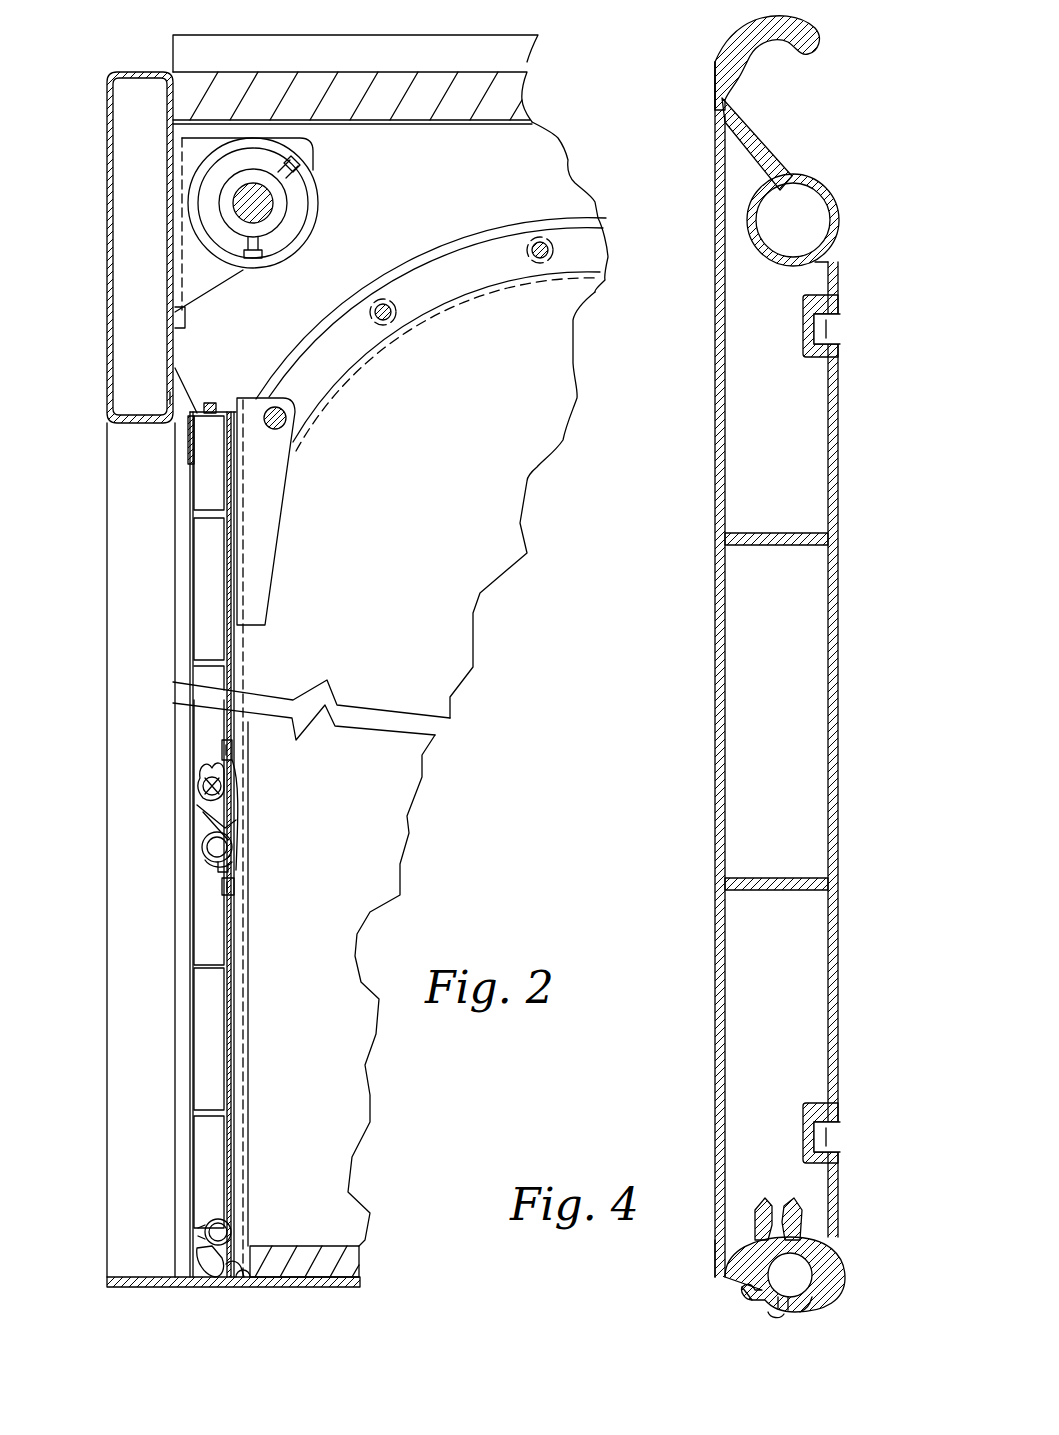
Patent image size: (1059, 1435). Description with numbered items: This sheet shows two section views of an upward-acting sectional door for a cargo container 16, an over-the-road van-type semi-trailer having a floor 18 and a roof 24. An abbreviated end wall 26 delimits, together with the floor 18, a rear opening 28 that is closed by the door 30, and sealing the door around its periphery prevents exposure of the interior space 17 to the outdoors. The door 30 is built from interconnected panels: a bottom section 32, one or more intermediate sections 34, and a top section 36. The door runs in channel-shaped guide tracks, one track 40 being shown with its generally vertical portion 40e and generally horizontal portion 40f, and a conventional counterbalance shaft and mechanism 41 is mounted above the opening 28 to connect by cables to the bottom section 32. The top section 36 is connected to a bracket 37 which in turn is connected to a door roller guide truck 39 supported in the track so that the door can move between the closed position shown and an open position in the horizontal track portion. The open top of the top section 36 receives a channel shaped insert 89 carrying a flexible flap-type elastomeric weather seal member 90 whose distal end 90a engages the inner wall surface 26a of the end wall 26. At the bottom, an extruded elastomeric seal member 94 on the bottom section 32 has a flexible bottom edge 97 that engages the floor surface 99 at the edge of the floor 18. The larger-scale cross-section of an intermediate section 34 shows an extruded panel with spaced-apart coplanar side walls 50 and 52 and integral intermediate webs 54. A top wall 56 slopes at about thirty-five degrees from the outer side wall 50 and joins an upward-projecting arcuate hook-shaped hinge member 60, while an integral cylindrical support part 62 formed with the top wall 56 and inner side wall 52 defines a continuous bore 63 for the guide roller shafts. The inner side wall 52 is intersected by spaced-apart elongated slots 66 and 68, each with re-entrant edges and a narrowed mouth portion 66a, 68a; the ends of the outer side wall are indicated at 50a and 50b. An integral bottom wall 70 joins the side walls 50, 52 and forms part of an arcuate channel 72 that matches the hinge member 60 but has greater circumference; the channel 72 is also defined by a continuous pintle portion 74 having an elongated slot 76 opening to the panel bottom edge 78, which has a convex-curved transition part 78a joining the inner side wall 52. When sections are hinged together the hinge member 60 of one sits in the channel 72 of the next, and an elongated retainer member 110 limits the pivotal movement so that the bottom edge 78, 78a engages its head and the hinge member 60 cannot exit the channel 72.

In FIG. 2, the cargo container 16 is at (270, 26).
In FIG. 2, the interior space 17 is at (410, 606).
In FIG. 2, the floor 18 is at (297, 1244).
In FIG. 2, the roof 24 is at (360, 36).
In FIG. 2, the end wall 26 is at (107, 165).
In FIG. 2, the inner wall surface 26a is at (190, 330).
In FIG. 2, the rear opening 28 is at (128, 420).
In FIG. 2, the sectional door 30 is at (192, 1112).
In FIG. 2, the bottom section 32 is at (192, 1030).
In FIG. 2, the intermediate section 34 is at (160, 809).
In FIG. 4, the intermediate section 34 is at (776, 670).
In FIG. 2, the top section 36 is at (190, 549).
In FIG. 2, the bracket 37 is at (270, 520).
In FIG. 2, the door roller guide truck 39 is at (462, 258).
In FIG. 2, the guide track 40 is at (304, 974).
In FIG. 2, the vertical portion of guide track 40e is at (258, 922).
In FIG. 2, the horizontal portion of guide track 40f is at (568, 164).
In FIG. 2, the counterbalance shaft and mechanism 41 is at (320, 200).
In FIG. 4, the outer side wall 50 is at (715, 442).
In FIG. 4, the wall upper end 50a is at (715, 60).
In FIG. 4, the wall lower end 50b is at (712, 1280).
In FIG. 4, the inner side wall 52 is at (838, 476).
In FIG. 4, the intermediate web 54 is at (758, 545).
In FIG. 4, the top wall 56 is at (753, 150).
In FIG. 2, the hinge member 60 is at (222, 790).
In FIG. 4, the hinge member 60 is at (784, 22).
In FIG. 4, the cylindrical support part 62 is at (790, 268).
In FIG. 4, the bore 63 is at (779, 222).
In FIG. 4, the elongated slot 66 is at (854, 324).
In FIG. 4, the narrowed mouth portion 66a is at (841, 318).
In FIG. 4, the elongated slot 68 is at (854, 1133).
In FIG. 4, the narrowed mouth portion 68a is at (841, 1130).
In FIG. 4, the bottom wall 70 is at (800, 1241).
In FIG. 4, the arcuate channel 72 is at (801, 1269).
In FIG. 4, the pintle portion 74 is at (758, 1290).
In FIG. 4, the elongated slot 76 is at (783, 1300).
In FIG. 2, the panel bottom edge 78 is at (200, 806).
In FIG. 4, the panel bottom edge 78 is at (803, 1304).
In FIG. 4, the convex-curved transition part 78a is at (838, 1303).
In FIG. 2, the channel shaped insert 89 is at (193, 440).
In FIG. 2, the weather seal member 90 is at (170, 398).
In FIG. 2, the distal end of seal member 90a is at (184, 380).
In FIG. 2, the bottom seal member 94 is at (198, 1279).
In FIG. 2, the flexible bottom edge 97 is at (226, 1282).
In FIG. 2, the floor surface 99 is at (255, 1272).
In FIG. 2, the retainer member 110 is at (237, 817).